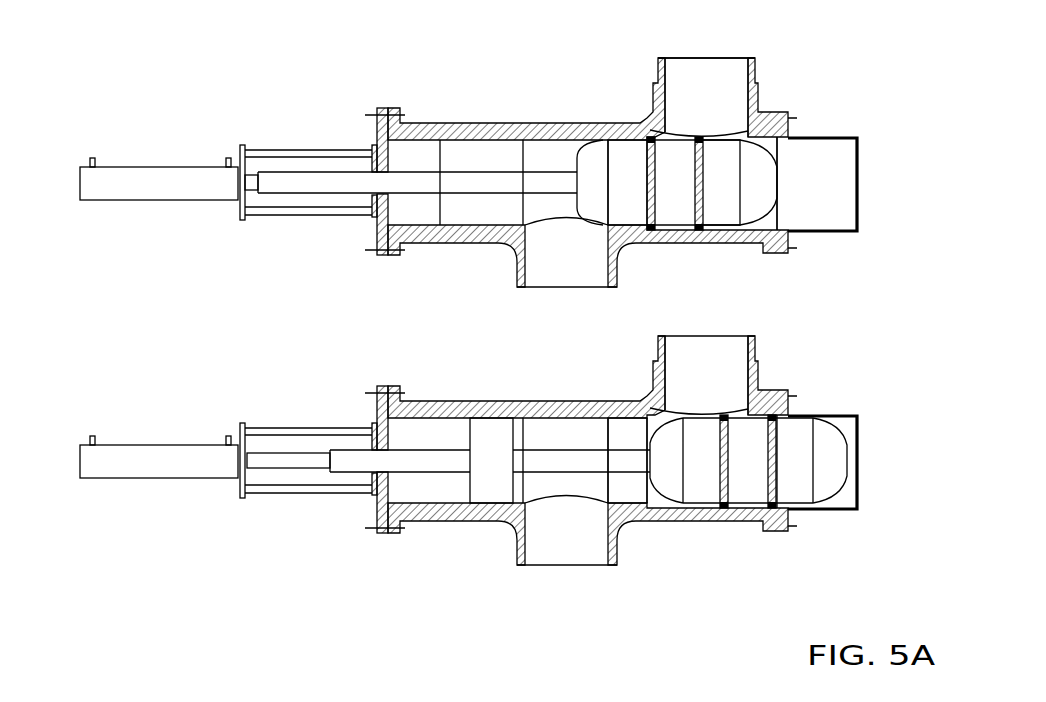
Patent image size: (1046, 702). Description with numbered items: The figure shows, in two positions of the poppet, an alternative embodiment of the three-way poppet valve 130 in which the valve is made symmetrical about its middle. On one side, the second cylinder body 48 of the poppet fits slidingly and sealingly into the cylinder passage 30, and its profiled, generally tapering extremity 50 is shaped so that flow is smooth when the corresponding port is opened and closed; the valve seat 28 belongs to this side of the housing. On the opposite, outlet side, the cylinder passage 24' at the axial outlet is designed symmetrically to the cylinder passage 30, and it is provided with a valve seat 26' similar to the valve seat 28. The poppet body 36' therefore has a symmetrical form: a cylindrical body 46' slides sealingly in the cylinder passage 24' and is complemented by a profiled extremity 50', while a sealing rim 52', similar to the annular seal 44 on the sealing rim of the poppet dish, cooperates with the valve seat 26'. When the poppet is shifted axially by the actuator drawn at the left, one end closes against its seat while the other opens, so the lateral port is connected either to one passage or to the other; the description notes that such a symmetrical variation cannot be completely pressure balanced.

The three-way poppet valve 130 is at (471, 285).
The second cylinder body 48 is at (627, 158).
The profiled extremity 50 is at (555, 154).
The valve seat 28 is at (646, 115).
The sealing rim 52' is at (716, 153).
The valve seat 26' is at (805, 144).
The cylinder passage 24' is at (822, 184).
The annular seal 44 is at (647, 225).
The poppet body 36' is at (697, 231).
The cylindrical body 46' is at (733, 226).
The profiled extremity 50' is at (770, 218).
The cylinder passage 30 is at (627, 430).